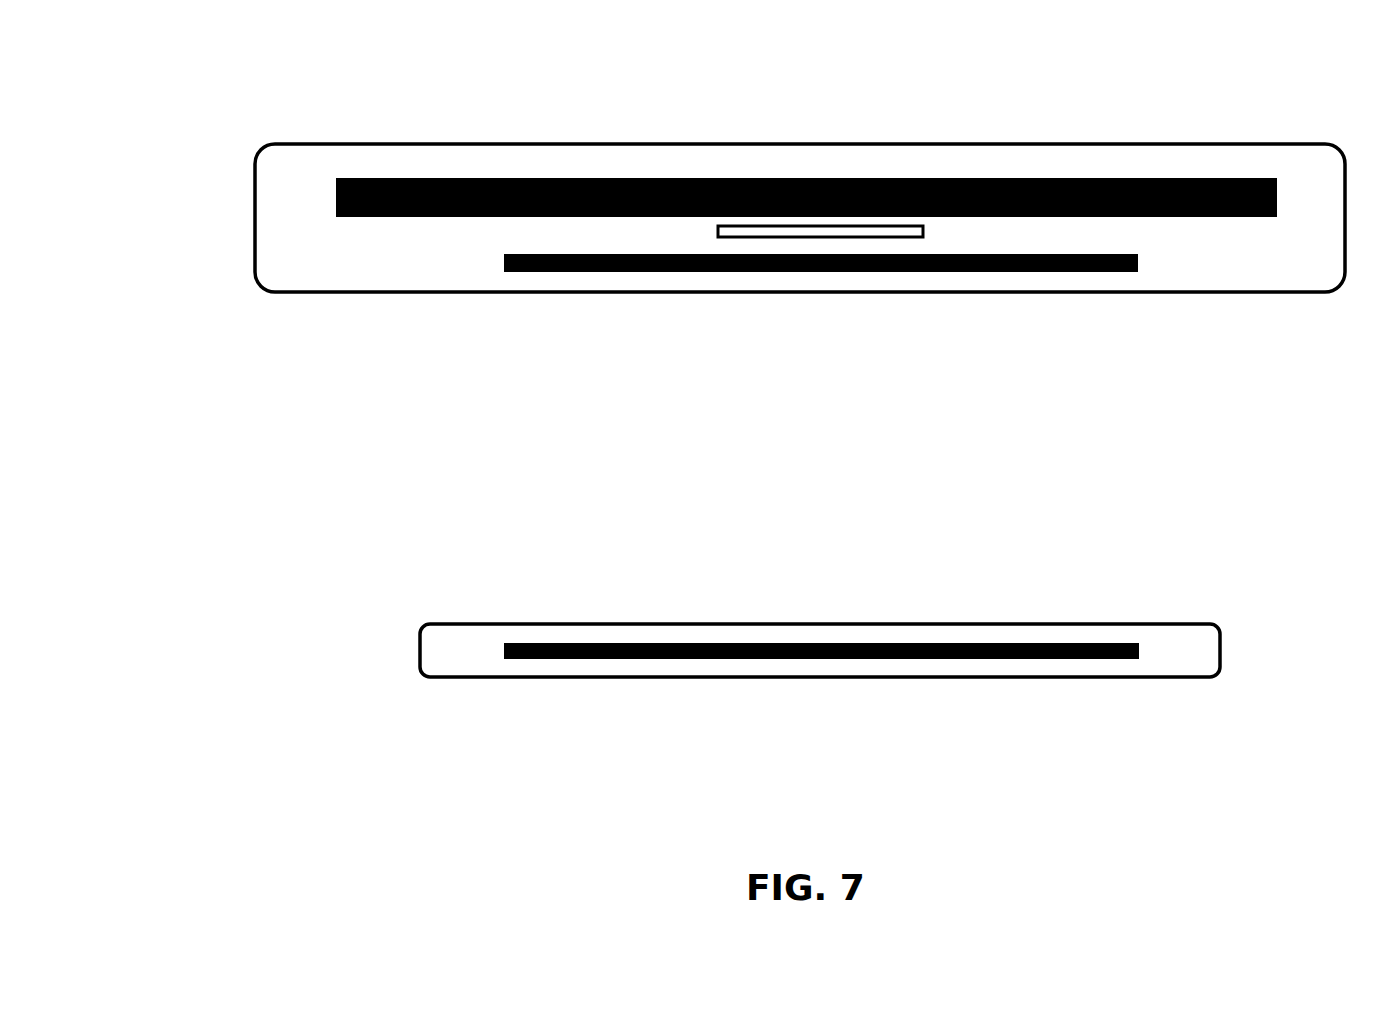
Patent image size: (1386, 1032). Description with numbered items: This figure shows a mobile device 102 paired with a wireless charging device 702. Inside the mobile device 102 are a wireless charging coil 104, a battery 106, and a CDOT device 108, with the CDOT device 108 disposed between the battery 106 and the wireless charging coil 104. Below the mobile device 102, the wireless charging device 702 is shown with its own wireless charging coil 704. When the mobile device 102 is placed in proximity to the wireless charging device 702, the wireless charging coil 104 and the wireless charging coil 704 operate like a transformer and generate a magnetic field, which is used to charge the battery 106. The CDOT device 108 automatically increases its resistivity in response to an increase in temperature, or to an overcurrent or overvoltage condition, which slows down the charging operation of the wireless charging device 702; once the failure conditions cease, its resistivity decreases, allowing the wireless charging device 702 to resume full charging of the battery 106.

The mobile device 102 is at (255, 203).
The wireless charging coil 104 is at (1010, 272).
The battery 106 is at (1148, 178).
The CDOT device 108 is at (743, 232).
The wireless charging device 702 is at (420, 643).
The wireless charging coil 704 is at (1006, 658).